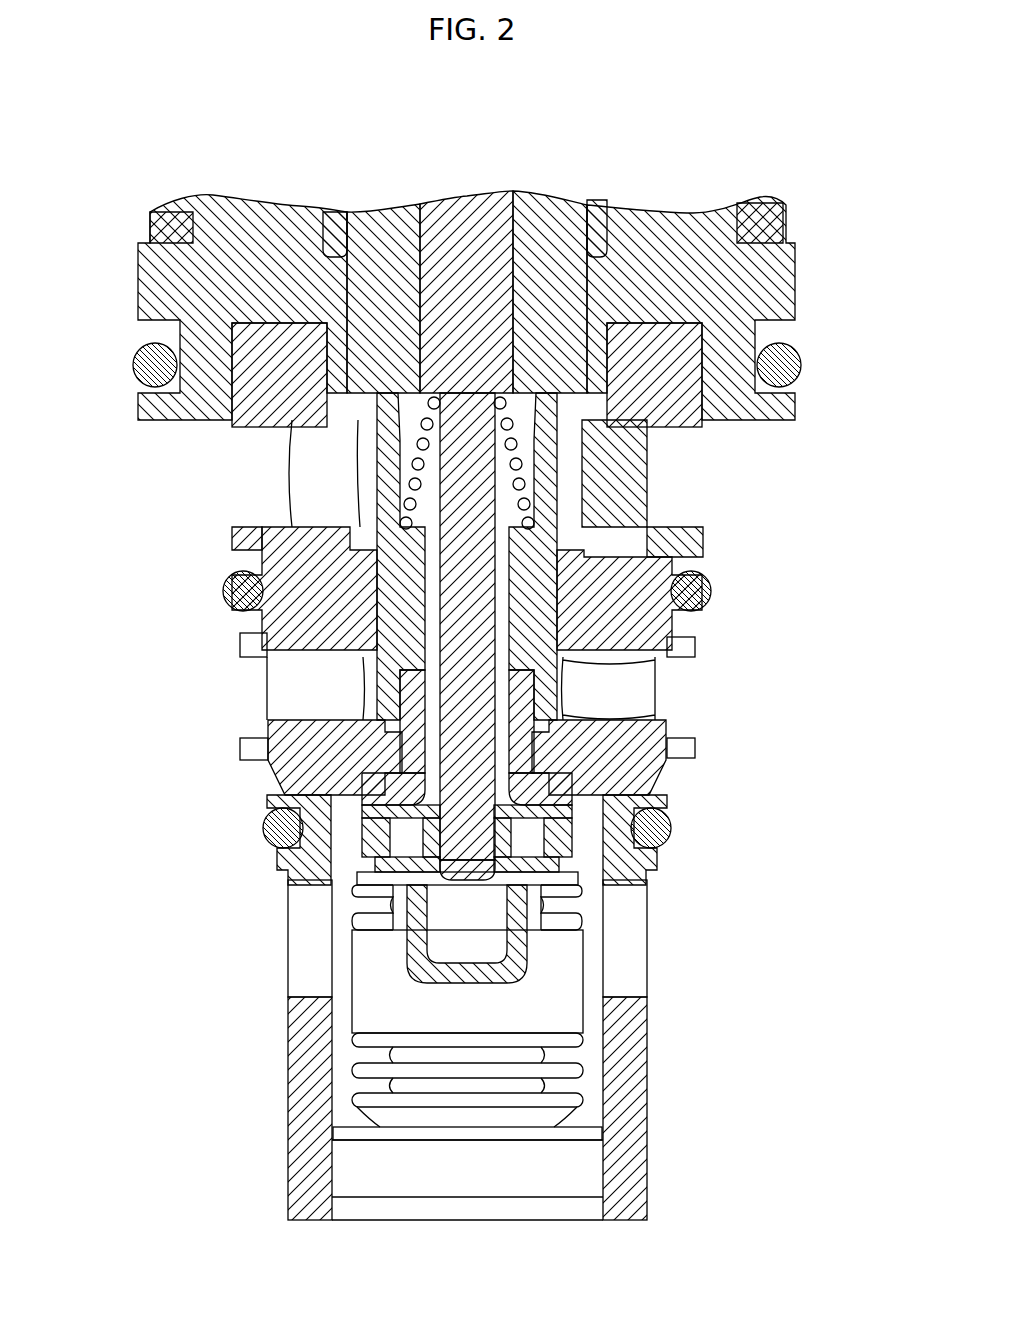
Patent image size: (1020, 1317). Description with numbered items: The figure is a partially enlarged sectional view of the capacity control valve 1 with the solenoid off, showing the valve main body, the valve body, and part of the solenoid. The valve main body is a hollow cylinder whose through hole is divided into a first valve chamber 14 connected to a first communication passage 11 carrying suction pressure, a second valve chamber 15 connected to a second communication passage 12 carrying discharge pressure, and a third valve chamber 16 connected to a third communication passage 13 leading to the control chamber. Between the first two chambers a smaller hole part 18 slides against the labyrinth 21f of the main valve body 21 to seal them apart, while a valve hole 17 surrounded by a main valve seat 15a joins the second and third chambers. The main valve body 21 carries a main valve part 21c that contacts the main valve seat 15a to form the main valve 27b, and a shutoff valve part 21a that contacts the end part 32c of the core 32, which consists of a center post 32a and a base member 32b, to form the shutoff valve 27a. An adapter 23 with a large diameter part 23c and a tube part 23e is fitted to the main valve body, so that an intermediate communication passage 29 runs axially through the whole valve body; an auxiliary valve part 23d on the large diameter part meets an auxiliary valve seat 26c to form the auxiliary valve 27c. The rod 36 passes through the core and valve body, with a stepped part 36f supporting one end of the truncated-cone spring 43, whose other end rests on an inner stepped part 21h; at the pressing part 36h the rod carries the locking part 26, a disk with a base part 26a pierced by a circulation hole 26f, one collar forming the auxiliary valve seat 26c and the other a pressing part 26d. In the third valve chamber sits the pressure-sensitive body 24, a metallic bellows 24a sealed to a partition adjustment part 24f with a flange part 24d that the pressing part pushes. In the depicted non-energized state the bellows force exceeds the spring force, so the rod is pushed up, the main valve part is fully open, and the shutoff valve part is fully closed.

The capacity control valve 1 is at (835, 203).
The first communication passage 11 is at (310, 452).
The second communication passage 12 is at (262, 655).
The third communication passage 13 is at (310, 968).
The first valve chamber 14 is at (365, 495).
The second valve chamber 15 is at (345, 690).
The main valve seat 15a is at (562, 723).
The third valve chamber 16 is at (345, 1040).
The valve hole 17 is at (698, 748).
The hole part 18 is at (245, 548).
The main valve body 21 is at (537, 583).
The shutoff valve part 21a is at (590, 405).
The main valve part 21c is at (553, 710).
The labyrinth 21f is at (370, 600).
The inner stepped part 21h is at (655, 540).
The adapter 23 is at (168, 693).
The large diameter part 23c is at (400, 760).
The auxiliary valve part 23d is at (375, 790).
The tube part 23e is at (400, 730).
The pressure-sensitive body 24 is at (760, 930).
The bellows 24a is at (583, 972).
The flange part 24d is at (600, 885).
The partition adjustment part 24f is at (567, 1155).
The locking part 26 is at (148, 815).
The base part 26a is at (412, 848).
The auxiliary valve seat 26c is at (367, 807).
The pressing part 26d is at (400, 865).
The circulation hole 26f is at (375, 837).
The shutoff valve 27a is at (860, 352).
The main valve 27b is at (760, 658).
The auxiliary valve 27c is at (755, 770).
The intermediate communication passage 29 is at (500, 623).
The core 32 is at (66, 243).
The center post 32a is at (340, 272).
The base member 32b is at (178, 298).
The end part of core 32c is at (610, 398).
The rod 36 is at (472, 230).
The stepped part 36f is at (520, 440).
The pressing part 36h is at (398, 885).
The spring 43 is at (575, 457).